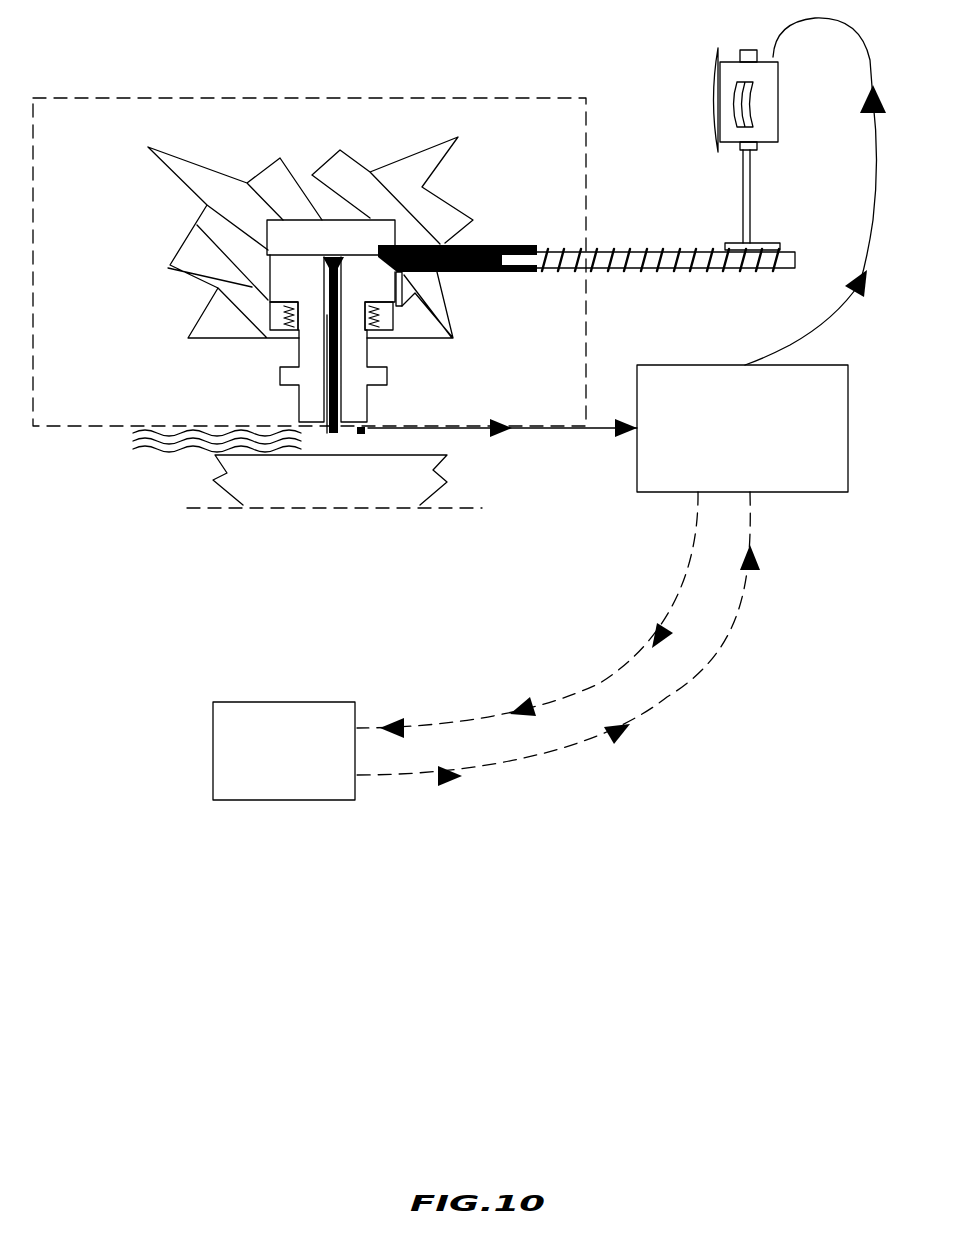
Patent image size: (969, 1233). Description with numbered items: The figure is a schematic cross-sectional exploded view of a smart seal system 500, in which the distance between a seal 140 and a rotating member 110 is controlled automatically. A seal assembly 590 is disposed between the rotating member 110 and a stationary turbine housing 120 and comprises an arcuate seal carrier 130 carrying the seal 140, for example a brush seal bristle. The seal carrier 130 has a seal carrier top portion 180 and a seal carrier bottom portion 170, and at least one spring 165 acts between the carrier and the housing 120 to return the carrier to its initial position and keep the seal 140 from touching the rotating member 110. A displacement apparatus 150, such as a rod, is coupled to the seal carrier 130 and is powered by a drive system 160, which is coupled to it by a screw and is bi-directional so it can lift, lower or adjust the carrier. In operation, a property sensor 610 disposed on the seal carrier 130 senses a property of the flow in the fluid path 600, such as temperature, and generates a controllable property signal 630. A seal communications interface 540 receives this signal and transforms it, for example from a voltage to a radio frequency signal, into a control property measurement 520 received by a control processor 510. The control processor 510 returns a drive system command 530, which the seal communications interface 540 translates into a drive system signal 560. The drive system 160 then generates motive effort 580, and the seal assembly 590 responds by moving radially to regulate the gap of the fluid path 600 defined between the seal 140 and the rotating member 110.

The smart seal system 500 is at (150, 62).
The seal assembly 590 is at (588, 185).
The stationary turbine housing 120 is at (207, 180).
The arcuate seal carrier 130 is at (295, 282).
The spring 165 is at (283, 330).
The seal carrier top portion 180 is at (305, 253).
The seal carrier bottom portion 170 is at (400, 320).
The displacement apparatus 150 is at (497, 272).
The motive effort 580 is at (748, 244).
The drive system 160 is at (778, 123).
The drive system signal 560 is at (787, 340).
The seal communications interface 540 is at (723, 478).
The controllable property signal 630 is at (557, 428).
The seal 140 is at (303, 425).
The fluid path 600 is at (133, 441).
The rotating member 110 is at (213, 475).
The property sensor 610 is at (355, 435).
The control processor 510 is at (266, 792).
The control property measurement 520 is at (577, 687).
The drive system command 530 is at (567, 750).